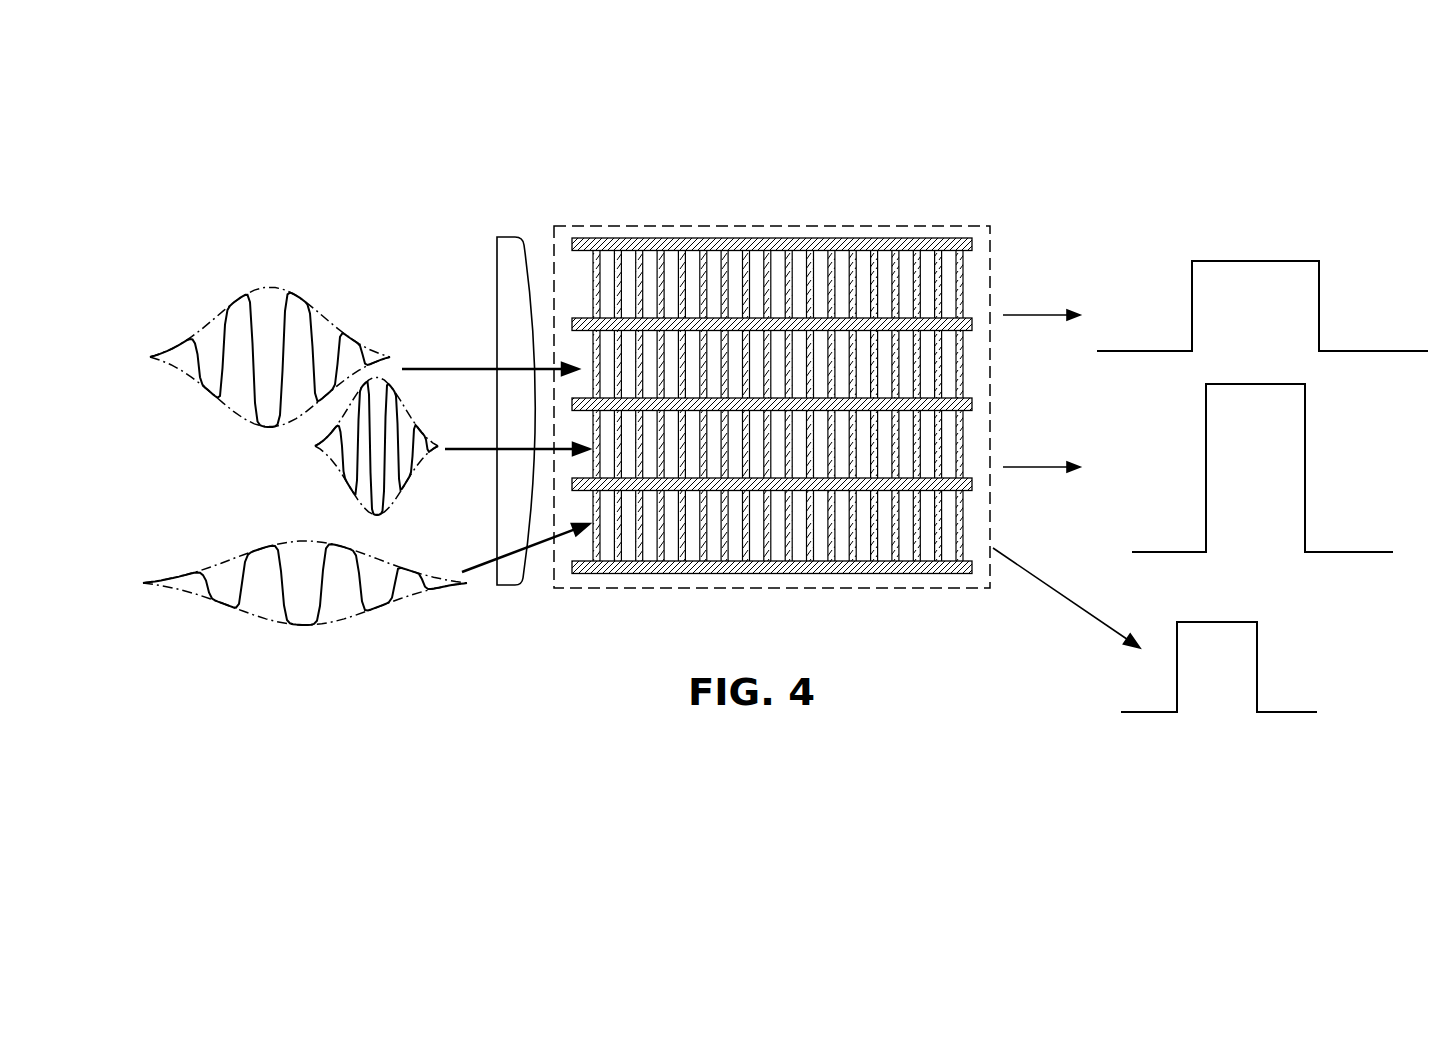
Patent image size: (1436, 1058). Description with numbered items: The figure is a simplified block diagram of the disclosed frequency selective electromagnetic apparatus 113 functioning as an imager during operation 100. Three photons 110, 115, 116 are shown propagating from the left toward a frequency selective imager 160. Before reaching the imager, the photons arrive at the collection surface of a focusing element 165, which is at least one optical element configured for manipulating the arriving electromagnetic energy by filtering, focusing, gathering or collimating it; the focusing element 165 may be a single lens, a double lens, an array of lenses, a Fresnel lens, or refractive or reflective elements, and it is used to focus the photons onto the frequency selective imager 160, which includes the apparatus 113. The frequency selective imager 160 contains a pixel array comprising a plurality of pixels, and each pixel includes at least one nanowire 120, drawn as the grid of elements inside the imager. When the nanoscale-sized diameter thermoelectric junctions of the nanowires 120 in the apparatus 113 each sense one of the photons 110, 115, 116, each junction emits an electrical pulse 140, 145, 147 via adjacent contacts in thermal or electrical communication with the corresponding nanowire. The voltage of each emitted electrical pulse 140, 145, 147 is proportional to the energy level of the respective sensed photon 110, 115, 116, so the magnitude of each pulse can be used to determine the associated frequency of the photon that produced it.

The operation 100 is at (972, 752).
The photon 110 is at (250, 293).
The frequency selective electromagnetic apparatus 113 is at (772, 407).
The photon 115 is at (349, 488).
The photon 116 is at (288, 625).
The nanowire 120 is at (636, 525).
The electrical pulse 140 is at (1216, 260).
The electrical pulse 145 is at (1330, 553).
The electrical pulse 147 is at (1265, 715).
The frequency selective imager 160 is at (848, 227).
The focusing element 165 is at (512, 293).